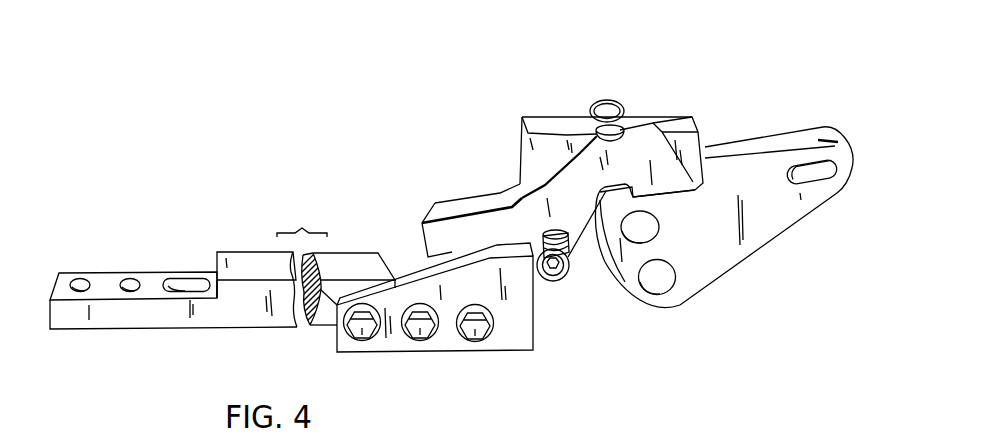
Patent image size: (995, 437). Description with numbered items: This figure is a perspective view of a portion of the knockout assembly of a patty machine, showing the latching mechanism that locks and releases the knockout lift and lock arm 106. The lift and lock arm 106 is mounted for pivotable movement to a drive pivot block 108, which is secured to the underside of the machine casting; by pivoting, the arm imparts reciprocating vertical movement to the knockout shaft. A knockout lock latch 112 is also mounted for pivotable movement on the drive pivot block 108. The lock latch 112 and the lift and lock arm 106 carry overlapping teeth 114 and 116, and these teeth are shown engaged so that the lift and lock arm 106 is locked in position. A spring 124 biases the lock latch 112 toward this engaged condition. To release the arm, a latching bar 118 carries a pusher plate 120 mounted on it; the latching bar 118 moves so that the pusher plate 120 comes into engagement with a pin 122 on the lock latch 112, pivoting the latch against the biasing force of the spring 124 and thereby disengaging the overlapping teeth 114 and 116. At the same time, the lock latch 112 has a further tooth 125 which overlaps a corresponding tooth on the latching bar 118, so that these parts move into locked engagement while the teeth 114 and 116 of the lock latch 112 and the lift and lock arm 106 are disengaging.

The knockout lift and lock arm 106 is at (717, 248).
The drive pivot block 108 is at (565, 122).
The knockout lock latch 112 is at (562, 178).
The tooth 114 is at (663, 193).
The tooth 116 is at (587, 242).
The latching bar 118 is at (236, 268).
The pusher plate 120 is at (508, 333).
The pin 122 is at (552, 279).
The spring 124 is at (619, 106).
The tooth 125 is at (458, 248).